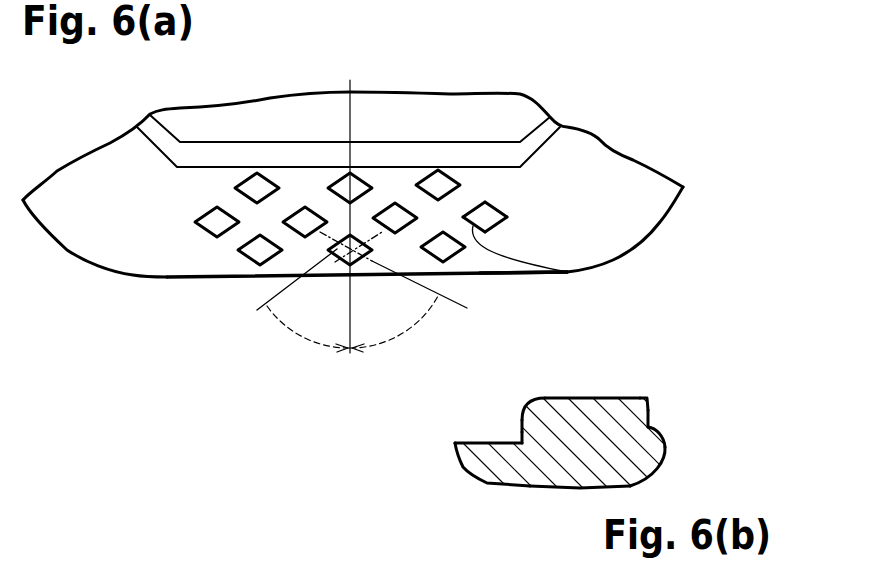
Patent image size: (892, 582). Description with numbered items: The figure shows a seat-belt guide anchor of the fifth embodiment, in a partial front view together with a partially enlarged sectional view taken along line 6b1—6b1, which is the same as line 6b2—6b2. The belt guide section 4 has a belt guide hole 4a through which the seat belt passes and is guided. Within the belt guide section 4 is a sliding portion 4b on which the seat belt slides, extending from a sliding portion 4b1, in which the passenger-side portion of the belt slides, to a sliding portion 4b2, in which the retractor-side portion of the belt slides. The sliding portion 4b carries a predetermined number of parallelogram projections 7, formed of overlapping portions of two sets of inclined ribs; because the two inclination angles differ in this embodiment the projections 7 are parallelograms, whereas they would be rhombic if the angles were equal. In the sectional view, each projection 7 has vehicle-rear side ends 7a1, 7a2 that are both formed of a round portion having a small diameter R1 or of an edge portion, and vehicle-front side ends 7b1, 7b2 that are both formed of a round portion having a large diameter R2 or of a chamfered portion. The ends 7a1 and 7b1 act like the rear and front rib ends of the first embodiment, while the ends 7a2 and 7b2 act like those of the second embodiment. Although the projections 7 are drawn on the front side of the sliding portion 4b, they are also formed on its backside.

In FIG. 6A, the belt guide section 4 is at (633, 207).
In FIG. 6A, the belt guide hole 4a is at (380, 145).
In FIG. 6A, the sliding portion 4b is at (217, 262).
In FIG. 6B, the sliding portion 4b is at (533, 472).
In FIG. 6A, the sliding portion 4b1 is at (484, 264).
In FIG. 6A, the sliding portion 4b2 is at (524, 294).
In FIG. 6A, the parallelogram projections 7 is at (343, 240).
In FIG. 6B, the parallelogram projections 7 is at (617, 398).
In FIG. 6A, the vehicle-rear side end 7a1 is at (497, 226).
In FIG. 6B, the vehicle-rear side end 7a1 is at (650, 427).
In FIG. 6A, the vehicle-rear side end 7a2 is at (498, 212).
In FIG. 6B, the vehicle-rear side end 7a2 is at (667, 472).
In FIG. 6A, the vehicle-front side end 7b1 is at (477, 207).
In FIG. 6B, the vehicle-front side end 7b1 is at (521, 430).
In FIG. 6A, the vehicle-front side end 7b2 is at (575, 272).
In FIG. 6B, the vehicle-front side end 7b2 is at (476, 417).
In FIG. 6A, the section line 6b1 is at (326, 237).
In FIG. 6A, the section line 6b2 is at (376, 237).
In FIG. 6B, the small diameter R1 is at (651, 394).
In FIG. 6B, the large diameter R2 is at (531, 397).